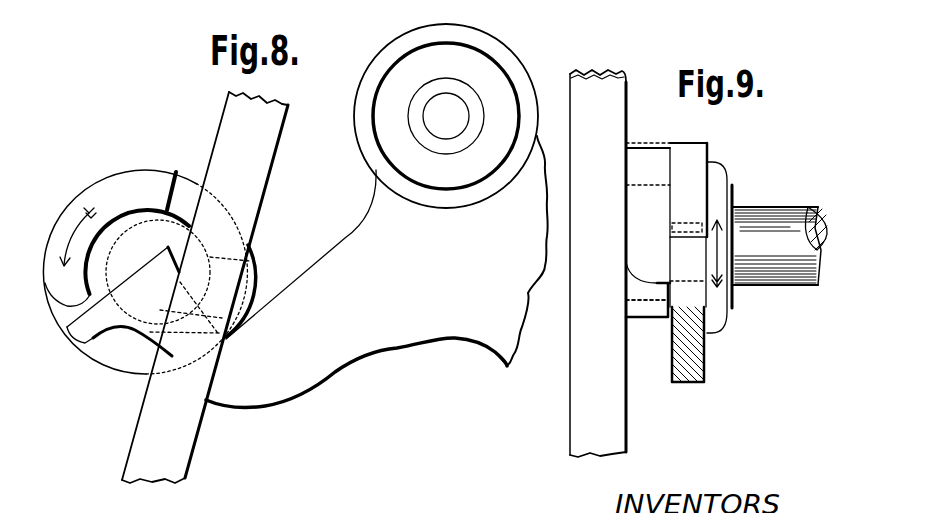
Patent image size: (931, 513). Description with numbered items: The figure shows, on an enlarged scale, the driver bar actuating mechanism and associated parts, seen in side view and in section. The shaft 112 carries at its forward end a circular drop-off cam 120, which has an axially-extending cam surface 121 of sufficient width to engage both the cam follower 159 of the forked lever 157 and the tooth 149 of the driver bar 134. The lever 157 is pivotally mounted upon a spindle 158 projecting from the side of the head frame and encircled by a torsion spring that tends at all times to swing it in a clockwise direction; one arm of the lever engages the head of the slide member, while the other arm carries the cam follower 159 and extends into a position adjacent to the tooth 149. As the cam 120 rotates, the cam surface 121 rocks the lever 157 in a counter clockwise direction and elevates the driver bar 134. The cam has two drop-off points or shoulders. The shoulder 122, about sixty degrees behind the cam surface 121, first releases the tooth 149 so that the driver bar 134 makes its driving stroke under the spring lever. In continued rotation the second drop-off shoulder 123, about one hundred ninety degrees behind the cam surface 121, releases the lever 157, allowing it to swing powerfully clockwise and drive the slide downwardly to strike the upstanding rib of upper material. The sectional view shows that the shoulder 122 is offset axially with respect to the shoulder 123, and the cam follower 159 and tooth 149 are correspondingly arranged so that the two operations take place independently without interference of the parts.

In FIG. 8, the shaft 112 is at (131, 232).
In FIG. 9, the shaft 112 is at (787, 222).
In FIG. 9, the circular drop-off cam 120 is at (684, 148).
In FIG. 8, the cam surface 121 is at (67, 306).
In FIG. 9, the cam surface 121 is at (665, 283).
In FIG. 8, the drop-off shoulder 122 is at (177, 172).
In FIG. 9, the drop-off shoulder 122 is at (646, 160).
In FIG. 8, the second drop-off shoulder 123 is at (254, 271).
In FIG. 9, the second drop-off shoulder 123 is at (690, 233).
In FIG. 8, the driver bar 134 is at (176, 450).
In FIG. 9, the driver bar 134 is at (583, 428).
In FIG. 9, the tooth 149 is at (647, 310).
In FIG. 8, the forked lever 157 is at (400, 331).
In FIG. 8, the spindle 158 is at (453, 108).
In FIG. 8, the cam follower 159 is at (95, 322).
In FIG. 9, the cam follower 159 is at (694, 372).